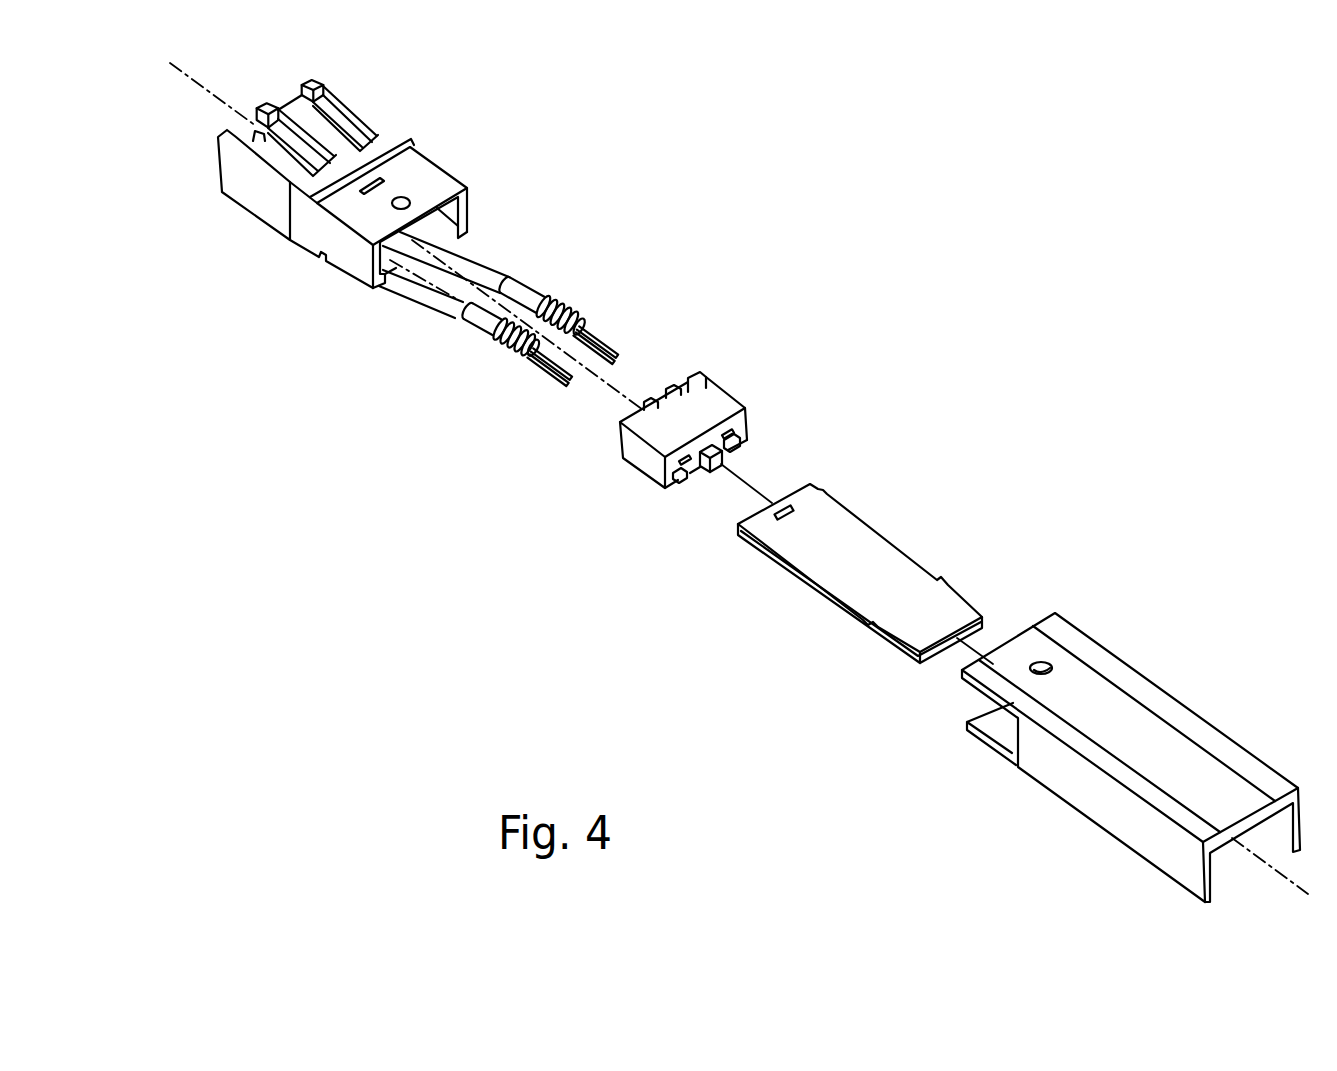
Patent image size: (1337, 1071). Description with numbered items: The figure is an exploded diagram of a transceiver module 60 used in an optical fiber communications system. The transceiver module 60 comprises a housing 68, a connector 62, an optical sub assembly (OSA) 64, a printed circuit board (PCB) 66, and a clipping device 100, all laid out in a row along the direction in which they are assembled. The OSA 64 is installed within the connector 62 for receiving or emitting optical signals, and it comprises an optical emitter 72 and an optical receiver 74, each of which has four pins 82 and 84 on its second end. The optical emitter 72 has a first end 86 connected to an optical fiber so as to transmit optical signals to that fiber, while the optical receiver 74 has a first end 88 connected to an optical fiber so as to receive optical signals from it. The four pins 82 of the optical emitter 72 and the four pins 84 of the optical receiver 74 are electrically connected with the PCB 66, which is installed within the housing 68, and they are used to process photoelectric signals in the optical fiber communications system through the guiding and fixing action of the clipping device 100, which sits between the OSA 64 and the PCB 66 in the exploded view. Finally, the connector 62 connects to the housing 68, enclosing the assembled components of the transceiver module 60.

The transceiver module 60 is at (925, 232).
The connector 62 is at (414, 162).
The optical sub assembly (OSA) 64 is at (597, 427).
The printed circuit board (PCB) 66 is at (835, 515).
The housing 68 is at (1127, 707).
The optical emitter 72 is at (503, 360).
The optical receiver 74 is at (575, 311).
The pins 82 is at (566, 389).
The pins 84 is at (624, 350).
The first end 86 is at (476, 409).
The first end 88 is at (618, 280).
The clipping device 100 is at (728, 401).